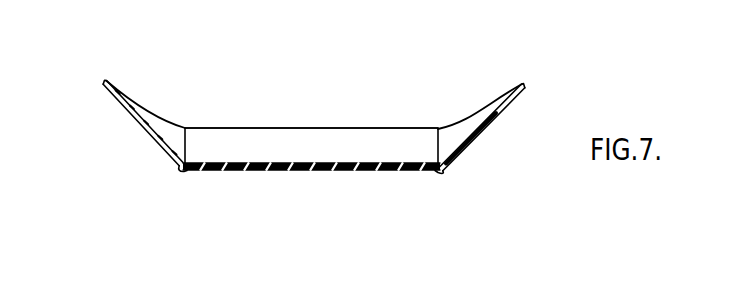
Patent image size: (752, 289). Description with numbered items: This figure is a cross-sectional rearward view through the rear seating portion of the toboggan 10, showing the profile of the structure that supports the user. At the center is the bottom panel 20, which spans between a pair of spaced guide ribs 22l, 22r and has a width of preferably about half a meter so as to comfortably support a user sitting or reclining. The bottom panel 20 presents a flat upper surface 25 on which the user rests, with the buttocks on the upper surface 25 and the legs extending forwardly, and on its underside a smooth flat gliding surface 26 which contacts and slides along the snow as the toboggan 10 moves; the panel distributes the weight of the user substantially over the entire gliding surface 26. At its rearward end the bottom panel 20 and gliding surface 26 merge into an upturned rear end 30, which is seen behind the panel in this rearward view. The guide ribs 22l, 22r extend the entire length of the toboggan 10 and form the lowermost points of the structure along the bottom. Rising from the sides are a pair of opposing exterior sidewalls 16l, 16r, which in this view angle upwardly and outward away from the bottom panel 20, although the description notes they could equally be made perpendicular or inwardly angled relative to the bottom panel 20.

The toboggan 10 is at (467, 89).
The right exterior sidewall 16r is at (128, 113).
The left exterior sidewall 16l is at (483, 125).
The right guide rib 22r is at (173, 170).
The left guide rib 22l is at (440, 175).
The flat upper surface 25 is at (262, 138).
The upturned rear end 30 is at (353, 142).
The bottom panel 20 is at (313, 172).
The gliding surface 26 is at (370, 172).